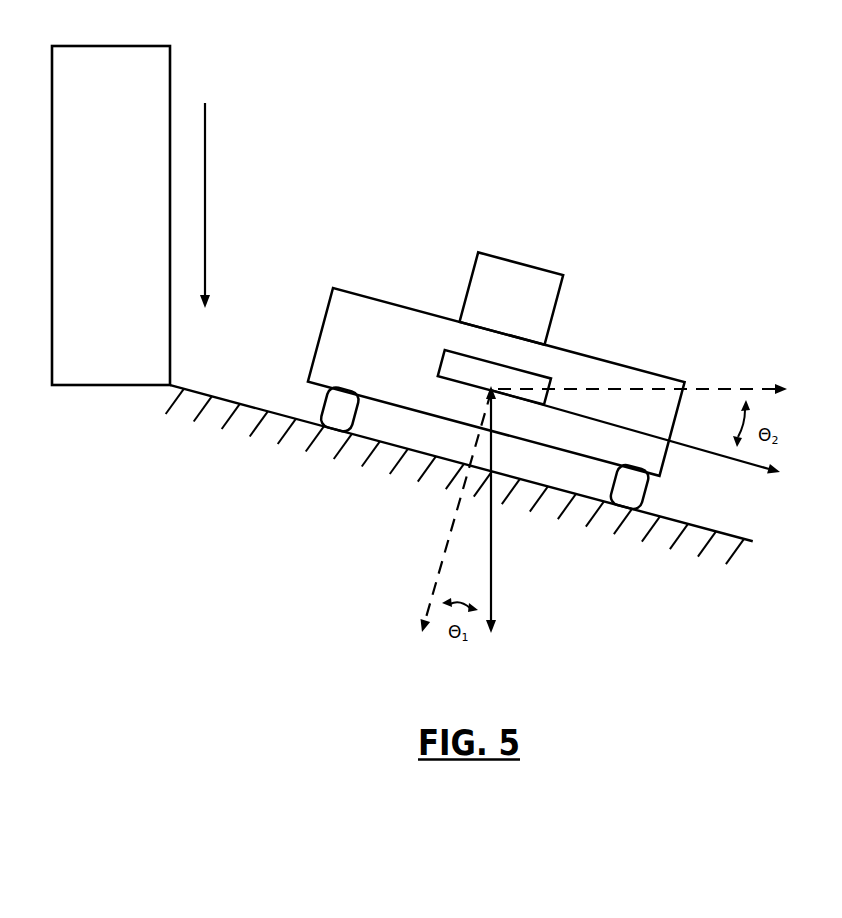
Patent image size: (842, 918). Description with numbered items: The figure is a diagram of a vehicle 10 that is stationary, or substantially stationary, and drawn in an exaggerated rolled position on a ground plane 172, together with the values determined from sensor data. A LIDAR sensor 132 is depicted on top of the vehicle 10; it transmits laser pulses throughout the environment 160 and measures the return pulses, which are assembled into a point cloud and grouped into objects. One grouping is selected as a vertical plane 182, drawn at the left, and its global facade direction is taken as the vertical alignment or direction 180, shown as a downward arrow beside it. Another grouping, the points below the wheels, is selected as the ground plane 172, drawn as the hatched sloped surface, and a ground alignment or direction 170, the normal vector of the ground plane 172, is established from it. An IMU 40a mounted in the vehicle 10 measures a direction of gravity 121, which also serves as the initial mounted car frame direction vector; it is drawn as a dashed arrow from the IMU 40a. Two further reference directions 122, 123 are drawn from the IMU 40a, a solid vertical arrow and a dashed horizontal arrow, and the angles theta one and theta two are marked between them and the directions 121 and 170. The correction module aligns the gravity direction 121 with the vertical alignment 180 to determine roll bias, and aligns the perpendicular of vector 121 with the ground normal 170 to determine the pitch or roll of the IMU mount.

The vehicle 10 is at (417, 310).
The IMU 40a is at (494, 377).
The direction of gravity 121 is at (443, 562).
The true vertical axis 122 is at (492, 553).
The horizontal reference axis 123 is at (727, 389).
The LIDAR sensor 132 is at (512, 298).
The environment 160 is at (355, 122).
The ground alignment or direction 170 is at (705, 451).
The ground plane 172 is at (254, 405).
The vertical alignment or direction 180 is at (205, 145).
The vertical plane 182 is at (100, 236).